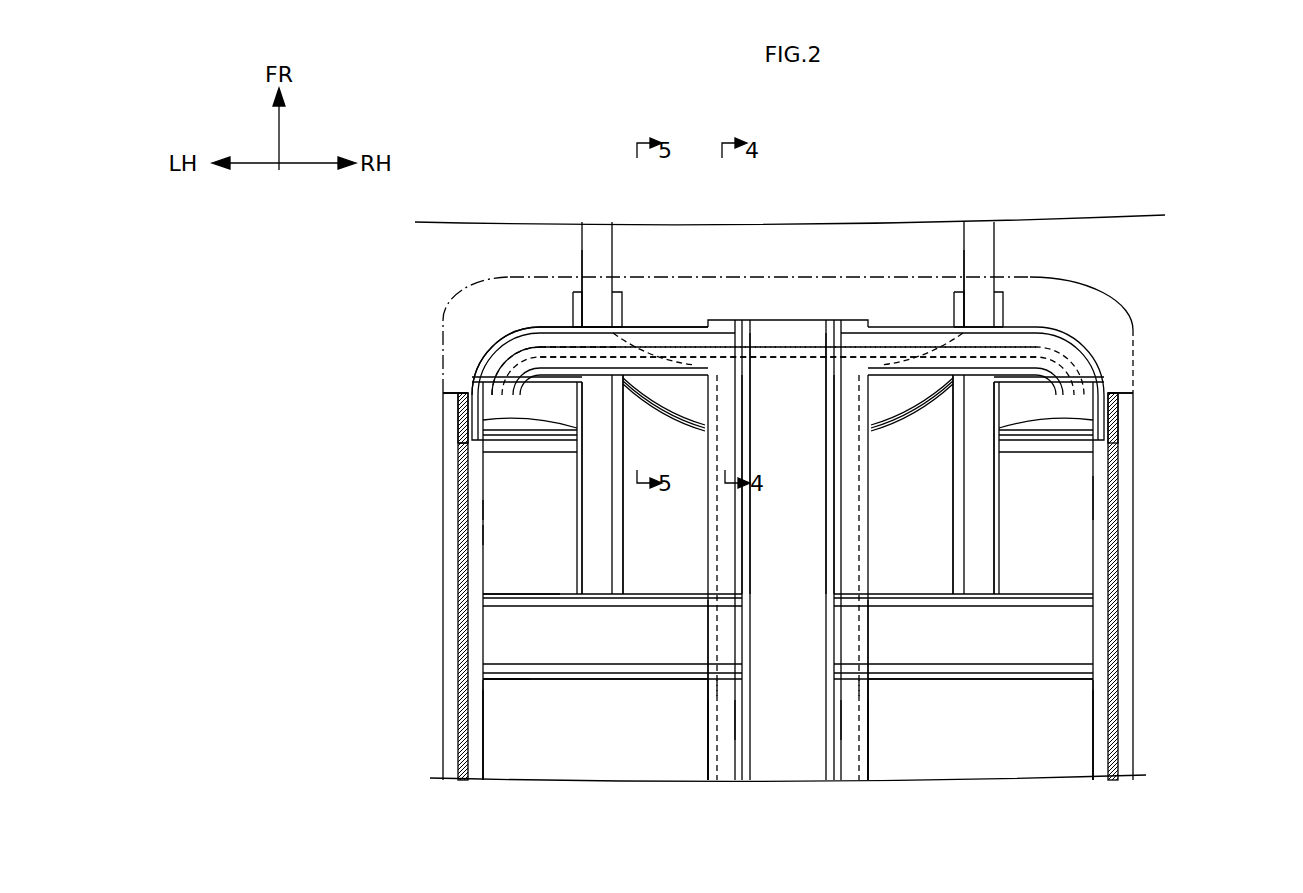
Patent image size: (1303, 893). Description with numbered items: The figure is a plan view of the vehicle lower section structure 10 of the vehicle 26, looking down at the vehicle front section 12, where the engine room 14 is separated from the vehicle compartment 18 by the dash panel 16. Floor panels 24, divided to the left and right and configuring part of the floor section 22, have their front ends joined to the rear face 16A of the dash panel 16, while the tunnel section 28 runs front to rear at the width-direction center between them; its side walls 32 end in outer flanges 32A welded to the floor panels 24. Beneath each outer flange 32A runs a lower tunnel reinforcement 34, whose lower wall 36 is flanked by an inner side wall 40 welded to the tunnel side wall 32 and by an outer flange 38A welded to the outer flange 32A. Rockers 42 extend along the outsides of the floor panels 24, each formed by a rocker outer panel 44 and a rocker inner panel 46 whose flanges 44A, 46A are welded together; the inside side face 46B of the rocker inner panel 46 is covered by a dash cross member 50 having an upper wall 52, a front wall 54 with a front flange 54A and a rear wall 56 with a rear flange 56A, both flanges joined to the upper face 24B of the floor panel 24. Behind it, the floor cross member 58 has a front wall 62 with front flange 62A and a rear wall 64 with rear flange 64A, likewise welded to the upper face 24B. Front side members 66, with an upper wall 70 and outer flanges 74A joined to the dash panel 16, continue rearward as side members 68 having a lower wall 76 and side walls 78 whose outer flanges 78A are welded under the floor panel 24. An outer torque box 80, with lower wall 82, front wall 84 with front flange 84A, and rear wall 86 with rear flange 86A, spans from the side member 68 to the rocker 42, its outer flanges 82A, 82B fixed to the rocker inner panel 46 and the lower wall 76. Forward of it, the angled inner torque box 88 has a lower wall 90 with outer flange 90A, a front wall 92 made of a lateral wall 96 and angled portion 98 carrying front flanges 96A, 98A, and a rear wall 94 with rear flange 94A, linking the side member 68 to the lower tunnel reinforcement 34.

The vehicle lower section structure 10 is at (324, 352).
The vehicle front section 12 is at (959, 170).
The engine room 14 is at (838, 258).
The dash panel 16 is at (1095, 296).
The rear face 16A is at (1128, 383).
The vehicle compartment 18 is at (897, 548).
The floor section 22 is at (598, 782).
The floor panel 24 is at (788, 730).
The upper face 24B is at (552, 782).
The vehicle 26 is at (1226, 184).
The tunnel section 28 is at (788, 550).
The side wall 32 is at (742, 782).
The outer flange 32A is at (714, 782).
The lower tunnel reinforcement 34 is at (717, 735).
The lower wall 36 is at (717, 748).
The outer flange 38A is at (717, 690).
The side wall 40 is at (742, 715).
The rocker 42 is at (452, 570).
The rocker outer panel 44 is at (443, 628).
The flange 44A is at (455, 528).
The rocker inner panel 46 is at (468, 655).
The flange 46A is at (483, 510).
The side face 46B is at (483, 534).
The dash cross member 50 is at (672, 324).
The upper wall 52 is at (828, 345).
The front wall 54 is at (740, 325).
The front flange 54A is at (690, 325).
The rear wall 56 is at (750, 380).
The rear flange 56A is at (748, 382).
The floor cross member 58 is at (552, 683).
The front wall 62 is at (535, 606).
The front flange 62A is at (507, 596).
The rear wall 64 is at (530, 672).
The rear flange 64A is at (510, 682).
The front side member 66 is at (582, 240).
The side member 68 is at (623, 503).
The upper wall 70 is at (592, 262).
The outer flange 74A is at (578, 318).
The lower wall 76 is at (623, 532).
The side wall 78 is at (577, 572).
The outer flange 78A is at (582, 552).
The outer torque box 80 is at (512, 454).
The lower wall 82 is at (470, 424).
The outer flange 82A is at (463, 412).
The outer flange 82B is at (470, 442).
The front wall 84 is at (531, 382).
The front flange 84A is at (485, 414).
The rear wall 86 is at (478, 450).
The rear flange 86A is at (538, 442).
The inner torque box 88 is at (682, 422).
The lower wall 90 is at (668, 412).
The outer flange 90A is at (535, 325).
The front wall 92 is at (788, 371).
The rear wall 94 is at (658, 387).
The rear flange 94A is at (497, 362).
The lateral wall 96 is at (522, 350).
The front flange 96A is at (632, 327).
The angled portion 98 is at (520, 360).
The front flange 98A is at (748, 357).